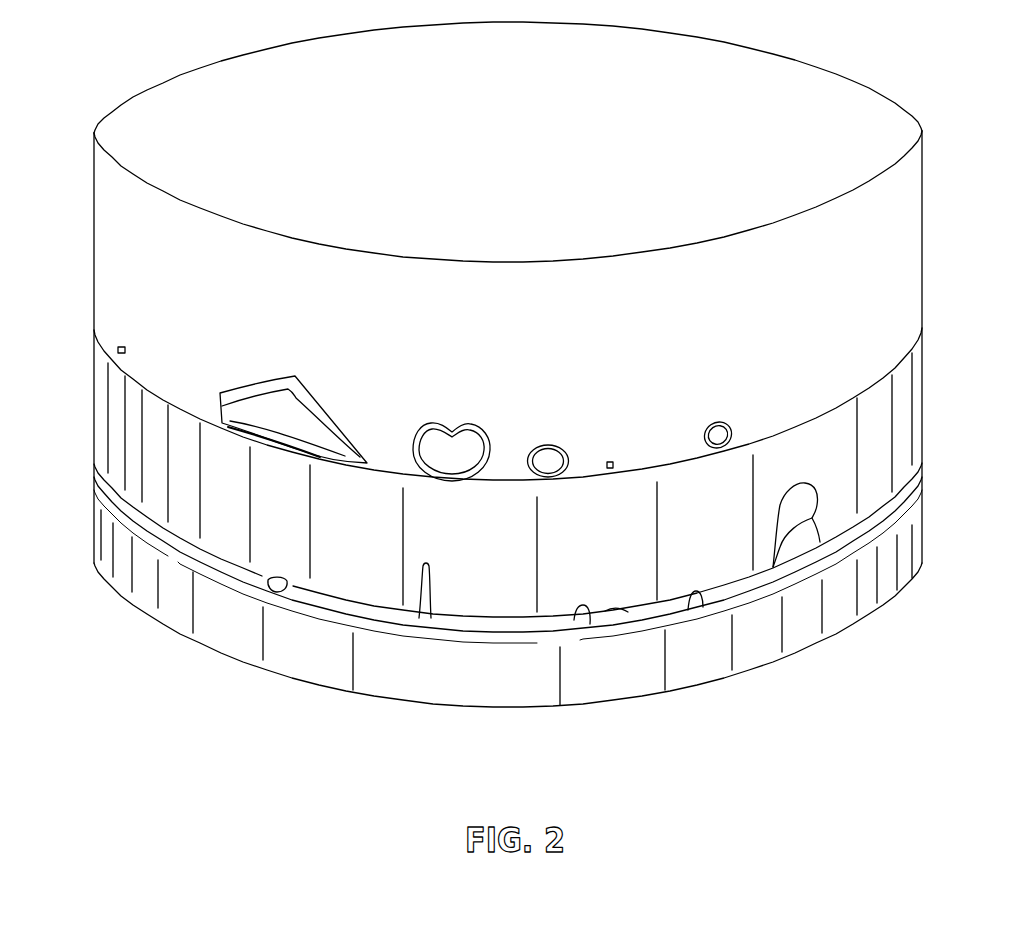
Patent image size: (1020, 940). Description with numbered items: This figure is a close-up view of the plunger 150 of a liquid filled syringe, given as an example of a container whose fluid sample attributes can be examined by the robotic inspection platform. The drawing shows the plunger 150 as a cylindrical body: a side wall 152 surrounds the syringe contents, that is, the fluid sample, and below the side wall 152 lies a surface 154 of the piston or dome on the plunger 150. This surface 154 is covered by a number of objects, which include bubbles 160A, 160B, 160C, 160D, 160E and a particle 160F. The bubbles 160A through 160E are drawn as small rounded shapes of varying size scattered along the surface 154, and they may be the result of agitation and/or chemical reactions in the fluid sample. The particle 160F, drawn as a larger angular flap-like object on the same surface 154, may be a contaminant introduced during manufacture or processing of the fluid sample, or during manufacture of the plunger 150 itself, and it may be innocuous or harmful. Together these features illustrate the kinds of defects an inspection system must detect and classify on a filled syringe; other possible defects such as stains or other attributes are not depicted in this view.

The plunger 150 is at (106, 91).
The side wall 152 is at (93, 308).
The surface 154 is at (812, 398).
The bubble 160A is at (124, 347).
The bubble 160B is at (613, 462).
The bubble 160C is at (453, 422).
The bubble 160D is at (547, 446).
The bubble 160E is at (718, 422).
The particle 160F is at (253, 383).